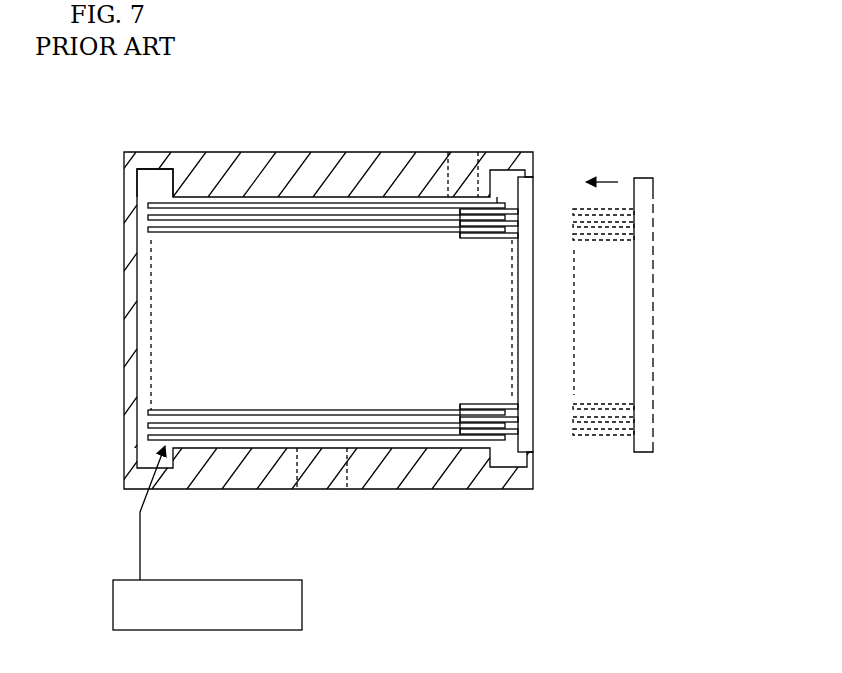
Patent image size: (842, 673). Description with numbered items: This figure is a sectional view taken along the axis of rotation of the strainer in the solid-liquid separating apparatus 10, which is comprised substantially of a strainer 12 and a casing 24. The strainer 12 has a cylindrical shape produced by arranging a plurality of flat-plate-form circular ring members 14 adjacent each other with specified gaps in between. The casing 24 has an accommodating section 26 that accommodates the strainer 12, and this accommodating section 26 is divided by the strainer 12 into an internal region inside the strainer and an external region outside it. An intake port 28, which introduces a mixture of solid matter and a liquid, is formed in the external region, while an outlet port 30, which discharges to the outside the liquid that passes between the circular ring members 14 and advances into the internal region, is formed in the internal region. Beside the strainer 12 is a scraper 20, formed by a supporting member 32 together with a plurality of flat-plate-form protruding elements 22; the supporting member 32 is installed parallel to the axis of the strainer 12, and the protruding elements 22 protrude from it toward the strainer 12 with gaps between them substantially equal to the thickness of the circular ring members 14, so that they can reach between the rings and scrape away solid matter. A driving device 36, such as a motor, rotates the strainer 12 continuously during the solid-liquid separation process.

The solid-liquid separating apparatus 10 is at (667, 297).
The strainer 12 is at (500, 195).
The circular ring members 14 is at (148, 206).
The scraper 20 is at (667, 321).
The flat-plate-form protruding elements 22 is at (463, 213).
The casing 24 is at (190, 150).
The accommodating section 26 is at (158, 182).
The intake port 28 is at (450, 168).
The outlet port 30 is at (300, 463).
The supporting member 32 is at (654, 278).
The driving device 36 is at (302, 622).